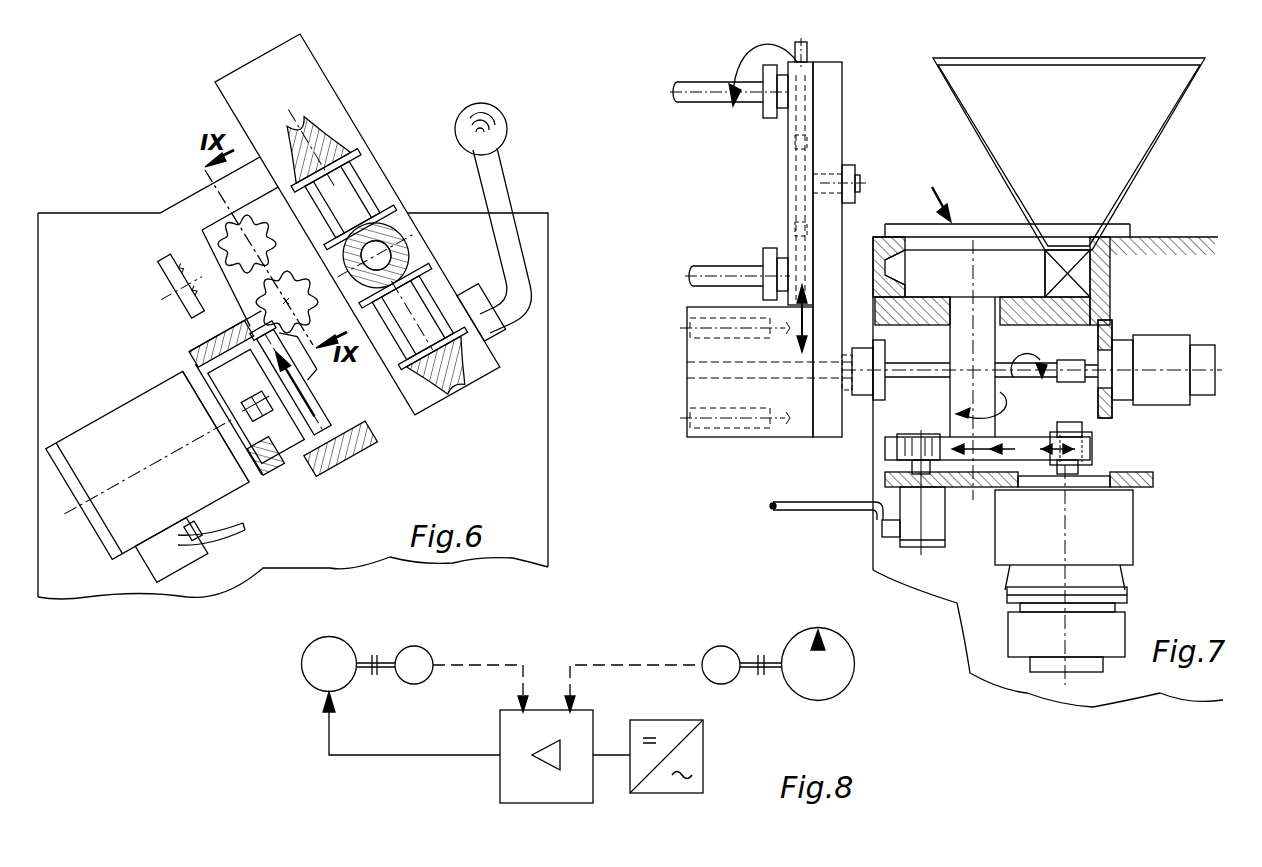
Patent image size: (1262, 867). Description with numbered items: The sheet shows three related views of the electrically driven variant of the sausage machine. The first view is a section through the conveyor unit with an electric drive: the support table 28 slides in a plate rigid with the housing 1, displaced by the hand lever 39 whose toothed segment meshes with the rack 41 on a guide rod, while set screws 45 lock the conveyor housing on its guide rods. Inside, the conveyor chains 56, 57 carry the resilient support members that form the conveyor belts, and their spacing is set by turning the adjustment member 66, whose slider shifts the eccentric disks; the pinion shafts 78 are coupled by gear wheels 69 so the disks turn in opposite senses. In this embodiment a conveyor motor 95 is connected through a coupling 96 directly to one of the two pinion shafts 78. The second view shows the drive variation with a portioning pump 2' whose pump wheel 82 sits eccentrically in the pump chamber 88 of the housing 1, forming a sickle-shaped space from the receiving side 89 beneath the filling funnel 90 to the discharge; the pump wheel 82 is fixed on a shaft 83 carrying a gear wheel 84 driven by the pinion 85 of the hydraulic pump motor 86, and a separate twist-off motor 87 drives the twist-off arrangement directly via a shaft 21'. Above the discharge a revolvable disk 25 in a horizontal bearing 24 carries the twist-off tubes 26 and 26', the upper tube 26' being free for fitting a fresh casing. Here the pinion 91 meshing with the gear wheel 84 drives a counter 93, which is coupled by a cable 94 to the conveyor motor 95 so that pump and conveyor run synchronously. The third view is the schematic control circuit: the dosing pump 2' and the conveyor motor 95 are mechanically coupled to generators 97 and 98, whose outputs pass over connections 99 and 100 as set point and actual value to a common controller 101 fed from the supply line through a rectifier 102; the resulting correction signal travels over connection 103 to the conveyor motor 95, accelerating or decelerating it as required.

In FIG. 7, the housing 1 is at (1163, 247).
In FIG. 7, the portioning pump 2' is at (946, 195).
In FIG. 8, the portioning pump 2' is at (818, 664).
In FIG. 7, the shaft 21' is at (1032, 386).
In FIG. 7, the bearing 24 is at (828, 175).
In FIG. 7, the revolvable disk 25 is at (797, 165).
In FIG. 7, the twist-off tube 26 is at (737, 263).
In FIG. 7, the twist-off tube 26' is at (734, 93).
In FIG. 6, the support table 28 is at (322, 105).
In FIG. 6, the hand lever 39 is at (495, 175).
In FIG. 6, the rack 41 is at (345, 443).
In FIG. 6, the set screws 45 is at (183, 306).
In FIG. 6, the chain 56 is at (385, 212).
In FIG. 6, the chain 57 is at (397, 287).
In FIG. 6, the adjustment member 66 is at (283, 287).
In FIG. 6, the gear wheels 69 is at (313, 412).
In FIG. 6, the pinion shaft 78 is at (312, 378).
In FIG. 7, the pump wheel 82 is at (975, 273).
In FIG. 7, the shaft 83 is at (972, 370).
In FIG. 7, the gear wheel 84 is at (1020, 440).
In FIG. 7, the pinion 85 is at (1087, 453).
In FIG. 7, the hydraulic pump motor 86 is at (1064, 575).
In FIG. 7, the twist-off motor 87 is at (1136, 369).
In FIG. 7, the pump chamber 88 is at (900, 300).
In FIG. 7, the receiving side 89 is at (1063, 260).
In FIG. 7, the filling funnel 90 is at (1069, 154).
In FIG. 7, the pinion 91 is at (920, 447).
In FIG. 7, the counter 93 is at (913, 492).
In FIG. 7, the cable 94 is at (818, 503).
In FIG. 6, the conveyor motor 95 is at (160, 482).
In FIG. 8, the conveyor motor 95 is at (329, 664).
In FIG. 6, the coupling 96 is at (238, 408).
In FIG. 8, the generator 97 is at (725, 675).
In FIG. 8, the generator 98 is at (412, 675).
In FIG. 8, the connection 99 is at (618, 667).
In FIG. 8, the connection 100 is at (477, 667).
In FIG. 8, the controller 101 is at (546, 756).
In FIG. 8, the rectifier 102 is at (695, 753).
In FIG. 8, the connection 103 is at (435, 757).